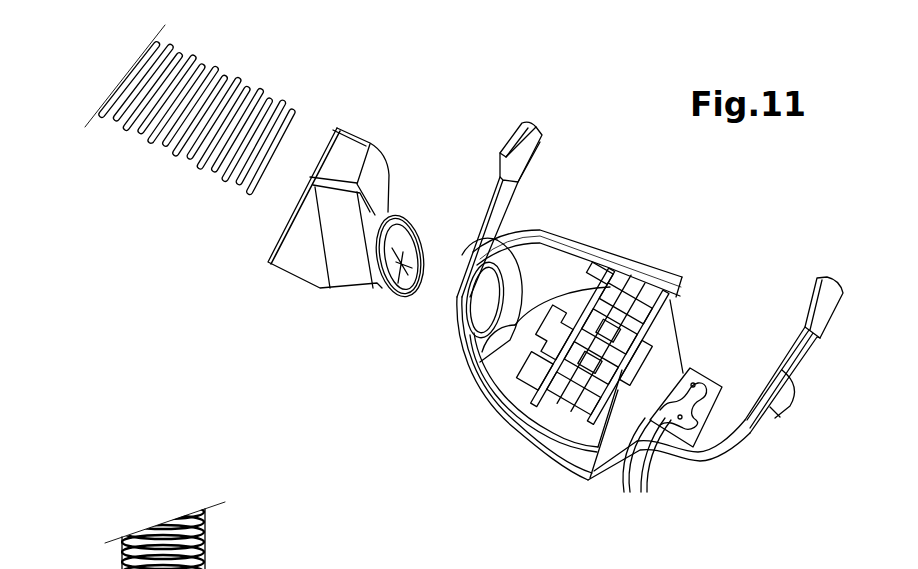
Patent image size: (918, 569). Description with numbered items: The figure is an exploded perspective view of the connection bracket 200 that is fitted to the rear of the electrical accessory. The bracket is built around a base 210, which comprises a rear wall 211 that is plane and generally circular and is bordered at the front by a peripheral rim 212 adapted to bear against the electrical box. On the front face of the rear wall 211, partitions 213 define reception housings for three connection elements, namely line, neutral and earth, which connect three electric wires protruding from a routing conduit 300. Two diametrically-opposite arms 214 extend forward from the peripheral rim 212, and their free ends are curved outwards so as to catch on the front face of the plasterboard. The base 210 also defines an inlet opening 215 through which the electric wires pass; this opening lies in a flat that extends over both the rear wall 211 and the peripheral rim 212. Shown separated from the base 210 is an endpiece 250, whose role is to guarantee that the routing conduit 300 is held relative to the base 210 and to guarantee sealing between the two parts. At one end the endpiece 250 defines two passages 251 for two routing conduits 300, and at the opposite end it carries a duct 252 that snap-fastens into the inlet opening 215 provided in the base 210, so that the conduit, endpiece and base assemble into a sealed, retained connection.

The connection bracket 200 is at (604, 330).
The base 210 is at (615, 230).
The rear wall 211 is at (522, 383).
The peripheral rim 212 is at (520, 357).
The partitions 213 is at (642, 480).
The arms 214 is at (537, 160).
The inlet opening 215 is at (465, 298).
The endpiece 250 is at (322, 180).
The passages 251 is at (313, 205).
The duct 252 is at (407, 243).
The routing conduit 300 is at (237, 82).